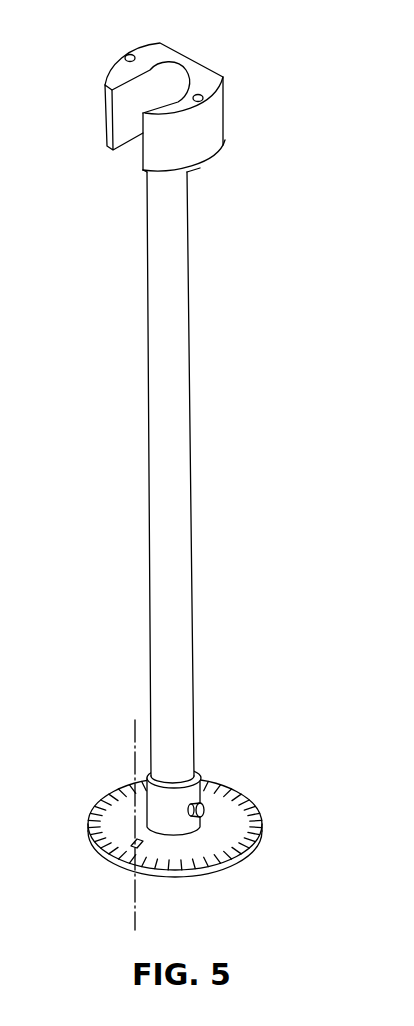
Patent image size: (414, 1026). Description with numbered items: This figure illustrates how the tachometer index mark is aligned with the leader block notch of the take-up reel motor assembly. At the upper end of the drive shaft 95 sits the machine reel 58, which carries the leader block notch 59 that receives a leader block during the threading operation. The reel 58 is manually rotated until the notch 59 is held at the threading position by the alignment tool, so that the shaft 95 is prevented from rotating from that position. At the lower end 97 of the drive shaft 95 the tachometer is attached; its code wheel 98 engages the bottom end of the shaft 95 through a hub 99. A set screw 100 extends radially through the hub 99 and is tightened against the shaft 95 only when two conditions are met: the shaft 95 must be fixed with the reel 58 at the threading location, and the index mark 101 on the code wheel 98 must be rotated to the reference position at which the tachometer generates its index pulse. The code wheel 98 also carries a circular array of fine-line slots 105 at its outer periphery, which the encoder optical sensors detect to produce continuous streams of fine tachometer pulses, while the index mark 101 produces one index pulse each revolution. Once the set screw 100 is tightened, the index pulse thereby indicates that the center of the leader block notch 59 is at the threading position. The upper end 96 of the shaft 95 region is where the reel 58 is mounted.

The machine reel 58 is at (143, 44).
The leader block notch 59 is at (158, 90).
The drive shaft 95 is at (180, 357).
The upper end of rod 96 is at (212, 178).
The lower end 97 is at (202, 775).
The code wheel 98 is at (105, 793).
The hub 99 is at (185, 832).
The set screw 100 is at (203, 812).
The index mark 101 is at (142, 841).
The fine-line slots 105 is at (135, 742).